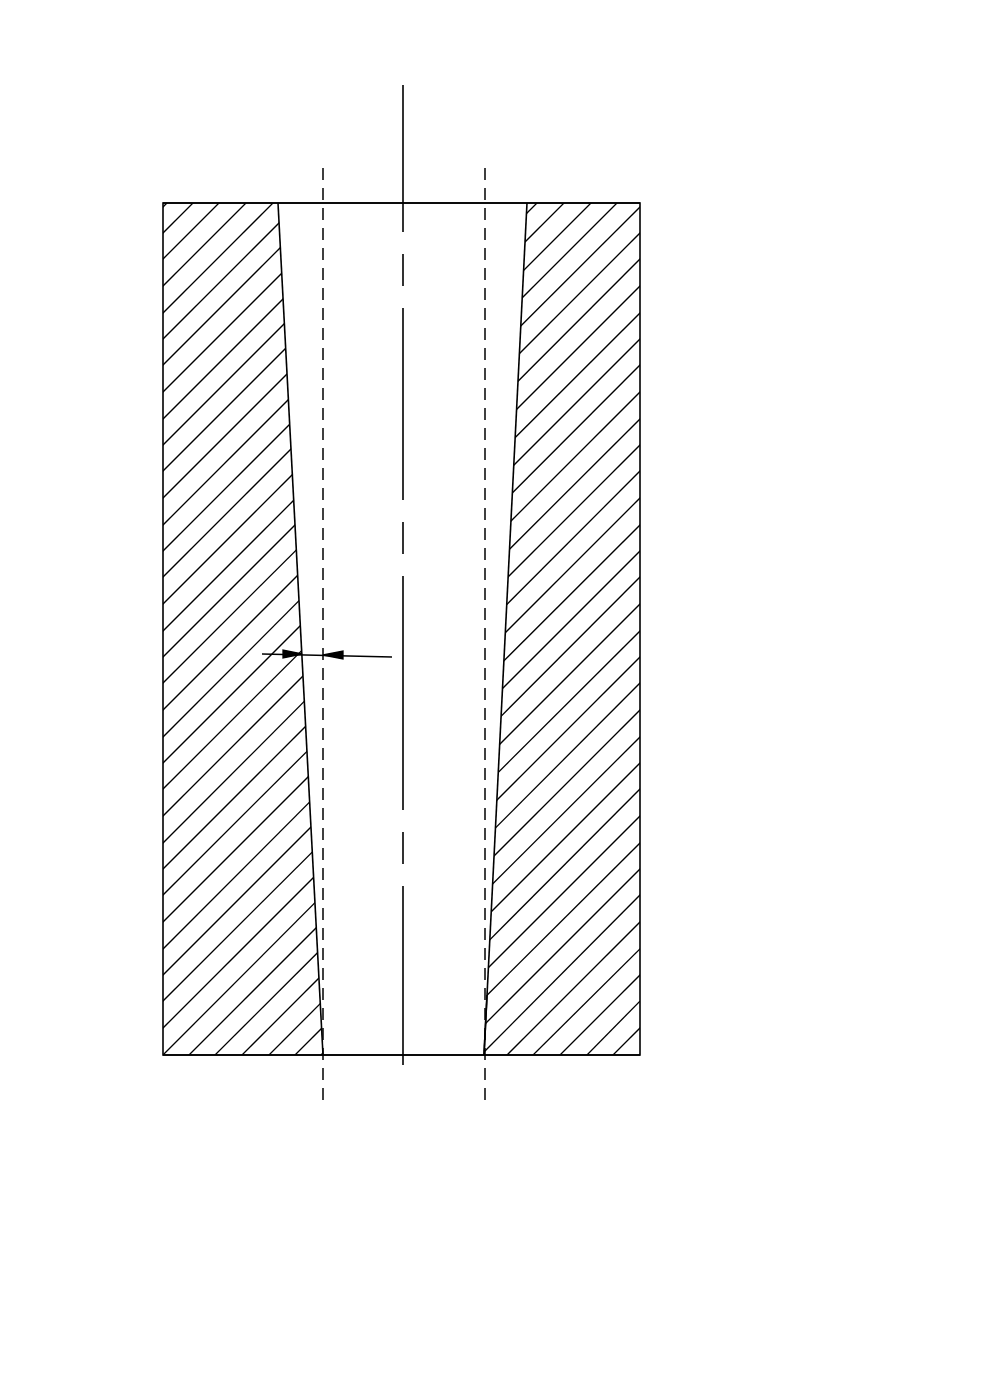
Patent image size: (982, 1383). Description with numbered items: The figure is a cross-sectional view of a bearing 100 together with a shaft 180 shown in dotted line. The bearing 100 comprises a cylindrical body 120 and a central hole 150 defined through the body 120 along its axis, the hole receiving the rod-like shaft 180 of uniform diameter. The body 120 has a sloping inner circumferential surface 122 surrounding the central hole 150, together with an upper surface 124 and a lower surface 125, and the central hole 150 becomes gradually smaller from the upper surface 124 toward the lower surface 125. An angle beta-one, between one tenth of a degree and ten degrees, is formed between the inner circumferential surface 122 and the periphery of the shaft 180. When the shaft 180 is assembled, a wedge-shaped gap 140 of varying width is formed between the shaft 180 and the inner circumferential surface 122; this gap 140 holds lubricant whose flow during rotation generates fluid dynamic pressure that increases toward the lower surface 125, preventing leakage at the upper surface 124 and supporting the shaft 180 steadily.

The bearing 100 is at (442, 687).
The cylindrical body 120 is at (615, 477).
The sloping inner circumferential surface 122 is at (485, 982).
The upper surface 124 is at (227, 202).
The lower surface 125 is at (230, 1055).
The wedge-shaped gap 140 is at (502, 305).
The central hole 150 is at (440, 230).
The shaft 180 is at (322, 182).